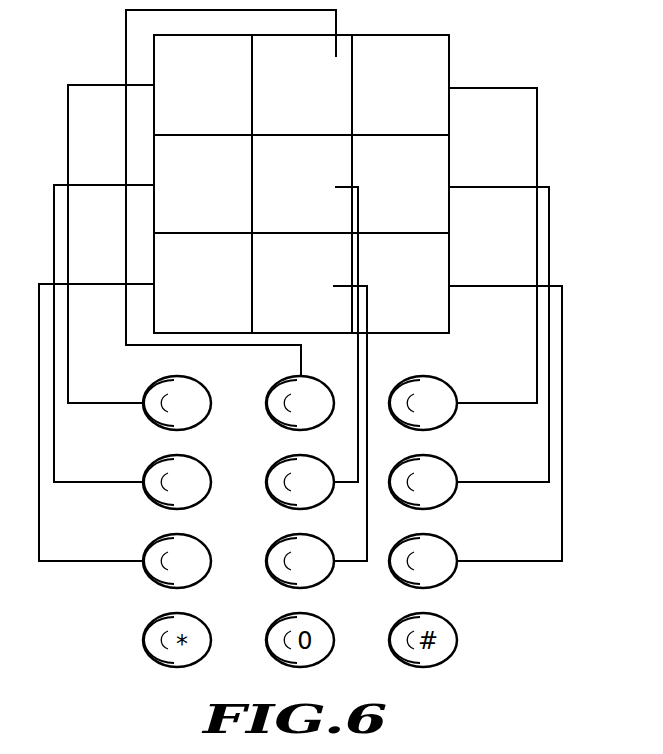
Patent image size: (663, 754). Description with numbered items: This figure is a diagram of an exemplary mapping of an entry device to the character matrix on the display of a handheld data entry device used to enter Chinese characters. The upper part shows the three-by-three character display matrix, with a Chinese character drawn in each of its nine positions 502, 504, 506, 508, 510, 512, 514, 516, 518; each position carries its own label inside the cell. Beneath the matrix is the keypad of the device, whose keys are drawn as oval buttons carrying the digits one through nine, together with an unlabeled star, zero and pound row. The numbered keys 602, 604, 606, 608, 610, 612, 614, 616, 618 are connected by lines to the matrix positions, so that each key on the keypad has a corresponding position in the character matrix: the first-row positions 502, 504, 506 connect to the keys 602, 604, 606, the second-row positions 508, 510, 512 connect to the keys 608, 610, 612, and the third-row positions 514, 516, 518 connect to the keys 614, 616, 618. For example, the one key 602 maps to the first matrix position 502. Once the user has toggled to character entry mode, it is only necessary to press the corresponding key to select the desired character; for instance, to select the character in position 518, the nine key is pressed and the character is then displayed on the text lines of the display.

The character cell 研 502 is at (176, 68).
The character cell 严 504 is at (275, 68).
The character cell 验 506 is at (373, 68).
The character cell 言 508 is at (176, 167).
The character cell 演 510 is at (275, 167).
The character cell 眼 512 is at (373, 167).
The character cell 烟 514 is at (176, 267).
The character cell 沿 516 is at (275, 267).
The position 518 is at (373, 267).
The 1 key 602 is at (153, 381).
The key 2 604 is at (276, 381).
The key 3 606 is at (450, 381).
The key 4 608 is at (153, 461).
The nine key 610 is at (276, 461).
The key 6 612 is at (450, 460).
The key 7 614 is at (153, 540).
The key 8 616 is at (276, 540).
The key 9 618 is at (450, 540).